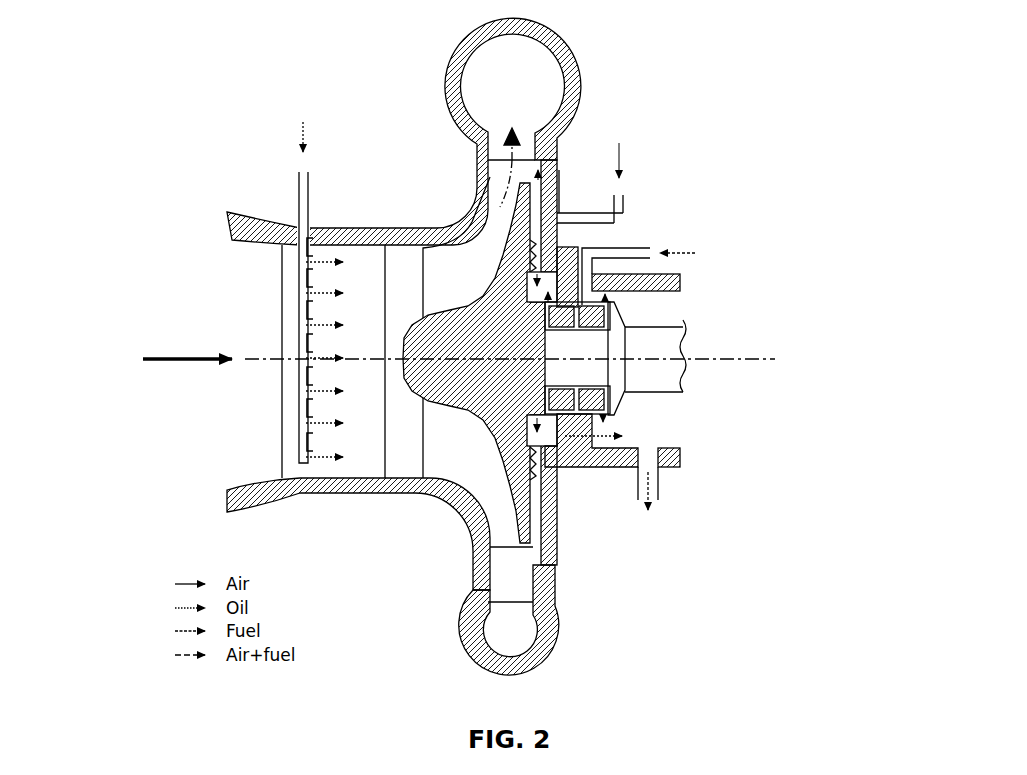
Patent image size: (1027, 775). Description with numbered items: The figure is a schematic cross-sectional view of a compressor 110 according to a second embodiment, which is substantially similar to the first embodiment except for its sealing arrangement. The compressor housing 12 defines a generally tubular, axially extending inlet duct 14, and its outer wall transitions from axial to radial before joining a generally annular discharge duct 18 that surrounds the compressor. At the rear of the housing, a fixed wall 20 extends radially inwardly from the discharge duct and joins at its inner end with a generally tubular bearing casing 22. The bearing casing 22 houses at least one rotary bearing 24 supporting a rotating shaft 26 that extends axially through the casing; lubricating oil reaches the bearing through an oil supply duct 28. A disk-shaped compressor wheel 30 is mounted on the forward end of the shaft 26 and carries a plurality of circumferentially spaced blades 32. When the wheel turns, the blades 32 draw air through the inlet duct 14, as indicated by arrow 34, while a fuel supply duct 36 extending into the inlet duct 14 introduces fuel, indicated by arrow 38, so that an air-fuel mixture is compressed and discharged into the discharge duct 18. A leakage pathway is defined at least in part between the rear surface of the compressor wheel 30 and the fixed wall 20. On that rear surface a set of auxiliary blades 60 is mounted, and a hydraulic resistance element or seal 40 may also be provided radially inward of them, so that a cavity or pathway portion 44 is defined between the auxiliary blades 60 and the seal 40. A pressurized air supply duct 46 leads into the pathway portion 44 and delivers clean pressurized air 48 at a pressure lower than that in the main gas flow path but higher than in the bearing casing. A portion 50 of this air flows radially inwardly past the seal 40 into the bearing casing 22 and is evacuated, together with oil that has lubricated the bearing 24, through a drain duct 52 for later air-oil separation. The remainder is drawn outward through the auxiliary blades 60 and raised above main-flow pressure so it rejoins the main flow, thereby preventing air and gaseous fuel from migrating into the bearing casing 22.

The compressor 110 is at (318, 66).
The compressor housing 12 is at (244, 203).
The inlet duct 14 is at (328, 230).
The discharge duct 18 is at (465, 646).
The fixed wall 20 is at (553, 545).
The bearing casing 22 is at (680, 283).
The rotary bearing 24 is at (606, 398).
The shaft 26 is at (665, 343).
The oil supply duct 28 is at (640, 249).
The compressor wheel 30 is at (477, 413).
The blades 32 is at (482, 478).
The arrow 34 is at (182, 355).
The fuel supply duct 36 is at (297, 442).
The arrow 38 is at (308, 143).
The seal 40 is at (554, 482).
The pathway portion 44 is at (554, 513).
The pressurized air supply duct 46 is at (623, 203).
The pressurized air 48 is at (581, 219).
The portion of pressurized air 50 is at (614, 183).
The drain duct 52 is at (662, 480).
The auxiliary blades 60 is at (555, 172).